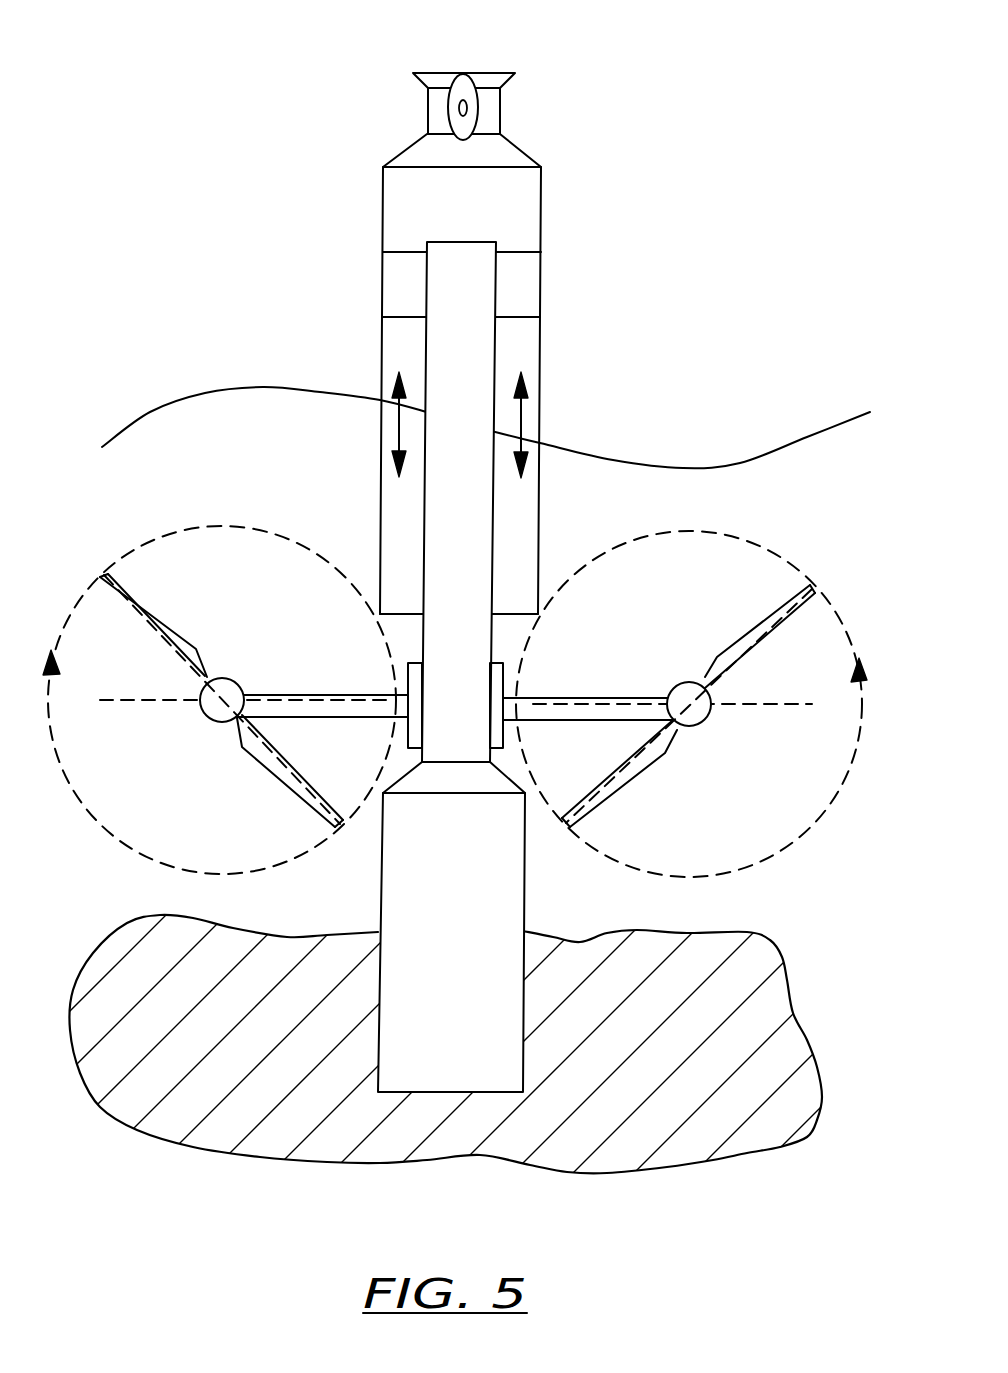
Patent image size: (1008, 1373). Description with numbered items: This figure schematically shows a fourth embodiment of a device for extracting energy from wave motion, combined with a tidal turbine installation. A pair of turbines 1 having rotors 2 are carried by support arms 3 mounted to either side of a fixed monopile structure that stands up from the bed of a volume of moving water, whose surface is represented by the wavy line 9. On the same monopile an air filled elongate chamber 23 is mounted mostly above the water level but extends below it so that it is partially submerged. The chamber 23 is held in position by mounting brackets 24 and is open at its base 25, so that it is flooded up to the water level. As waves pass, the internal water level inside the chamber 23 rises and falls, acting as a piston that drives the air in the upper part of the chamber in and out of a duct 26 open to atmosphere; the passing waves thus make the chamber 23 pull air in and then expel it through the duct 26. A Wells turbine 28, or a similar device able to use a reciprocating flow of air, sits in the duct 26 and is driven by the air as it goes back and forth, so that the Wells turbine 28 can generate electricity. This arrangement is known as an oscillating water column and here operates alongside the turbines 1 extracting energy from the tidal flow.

The turbine 1 is at (702, 723).
The rotor 2 is at (648, 753).
The support arm 3 is at (602, 697).
The wavy line 9 is at (150, 412).
The air filled elongate chamber 23 is at (380, 211).
The mounting bracket 24 is at (527, 278).
The base 25 is at (510, 616).
The duct 26 is at (442, 76).
The Wells turbine 28 is at (458, 108).